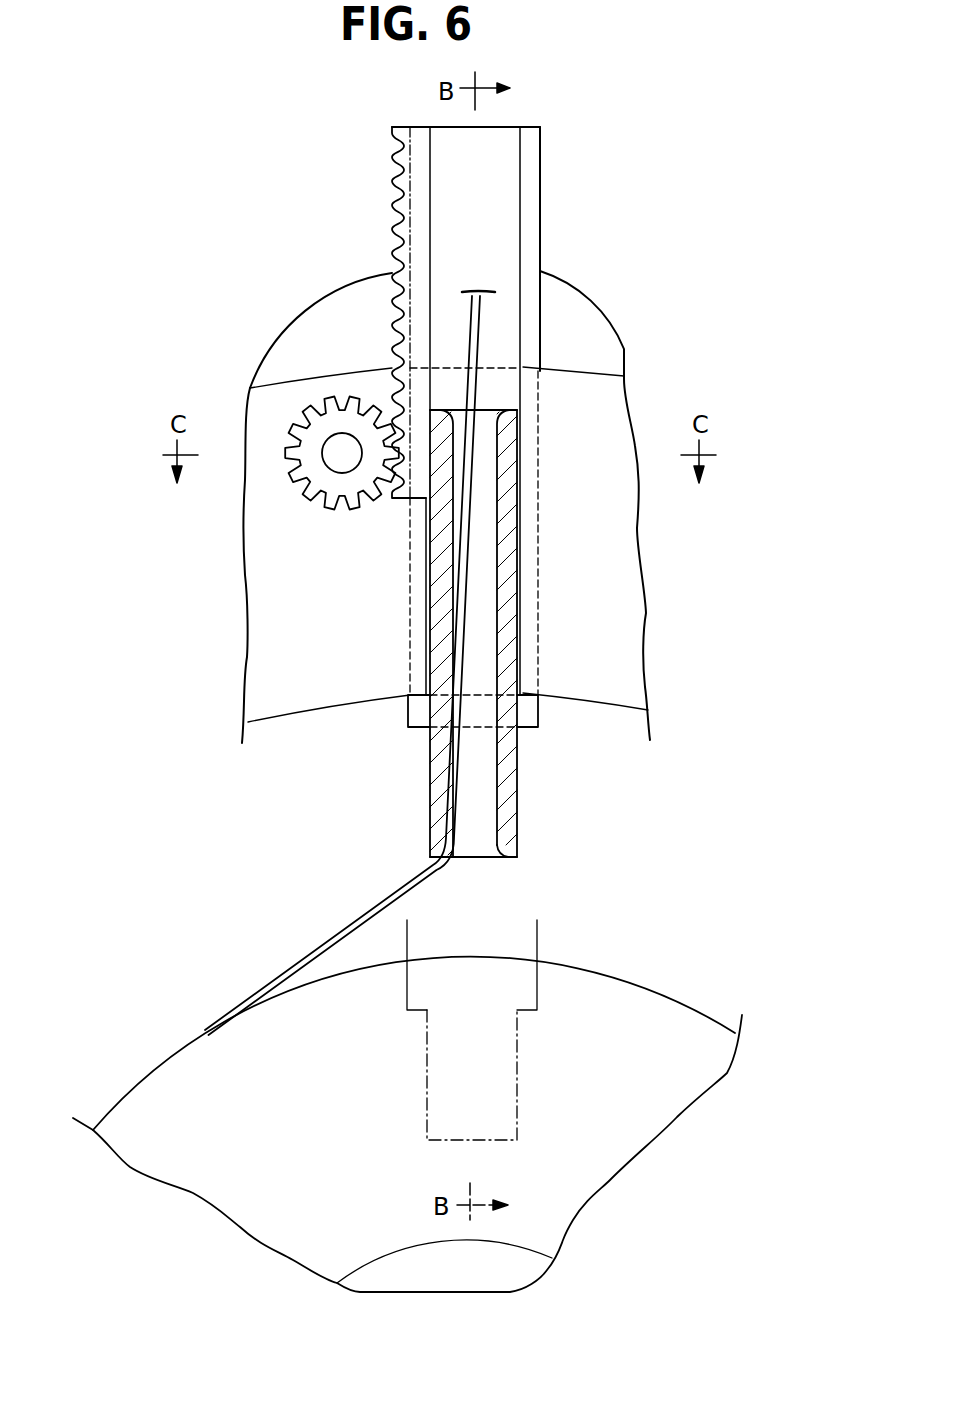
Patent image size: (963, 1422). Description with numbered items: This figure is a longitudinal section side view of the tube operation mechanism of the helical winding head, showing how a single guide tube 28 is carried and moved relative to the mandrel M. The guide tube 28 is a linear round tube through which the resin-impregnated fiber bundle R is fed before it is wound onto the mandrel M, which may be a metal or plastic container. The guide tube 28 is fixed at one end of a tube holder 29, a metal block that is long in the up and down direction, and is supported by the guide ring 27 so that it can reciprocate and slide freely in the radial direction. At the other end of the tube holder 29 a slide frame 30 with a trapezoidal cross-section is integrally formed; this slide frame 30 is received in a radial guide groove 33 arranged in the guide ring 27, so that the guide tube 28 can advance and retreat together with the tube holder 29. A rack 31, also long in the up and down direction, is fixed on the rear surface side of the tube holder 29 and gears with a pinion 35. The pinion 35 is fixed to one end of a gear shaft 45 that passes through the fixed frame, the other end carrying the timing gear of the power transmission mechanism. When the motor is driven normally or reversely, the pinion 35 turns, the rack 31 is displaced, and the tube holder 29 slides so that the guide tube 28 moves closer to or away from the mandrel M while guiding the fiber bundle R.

The guide ring 27 is at (626, 714).
The guide tube 28 is at (512, 843).
The tube holder 29 is at (517, 187).
The slide frame 30 is at (537, 720).
The rack 31 is at (392, 230).
The radial guide groove 33 is at (510, 610).
The pinion 35 is at (318, 493).
The gear shaft 45 is at (342, 465).
The fiber bundle R is at (390, 890).
The mandrel M is at (642, 985).